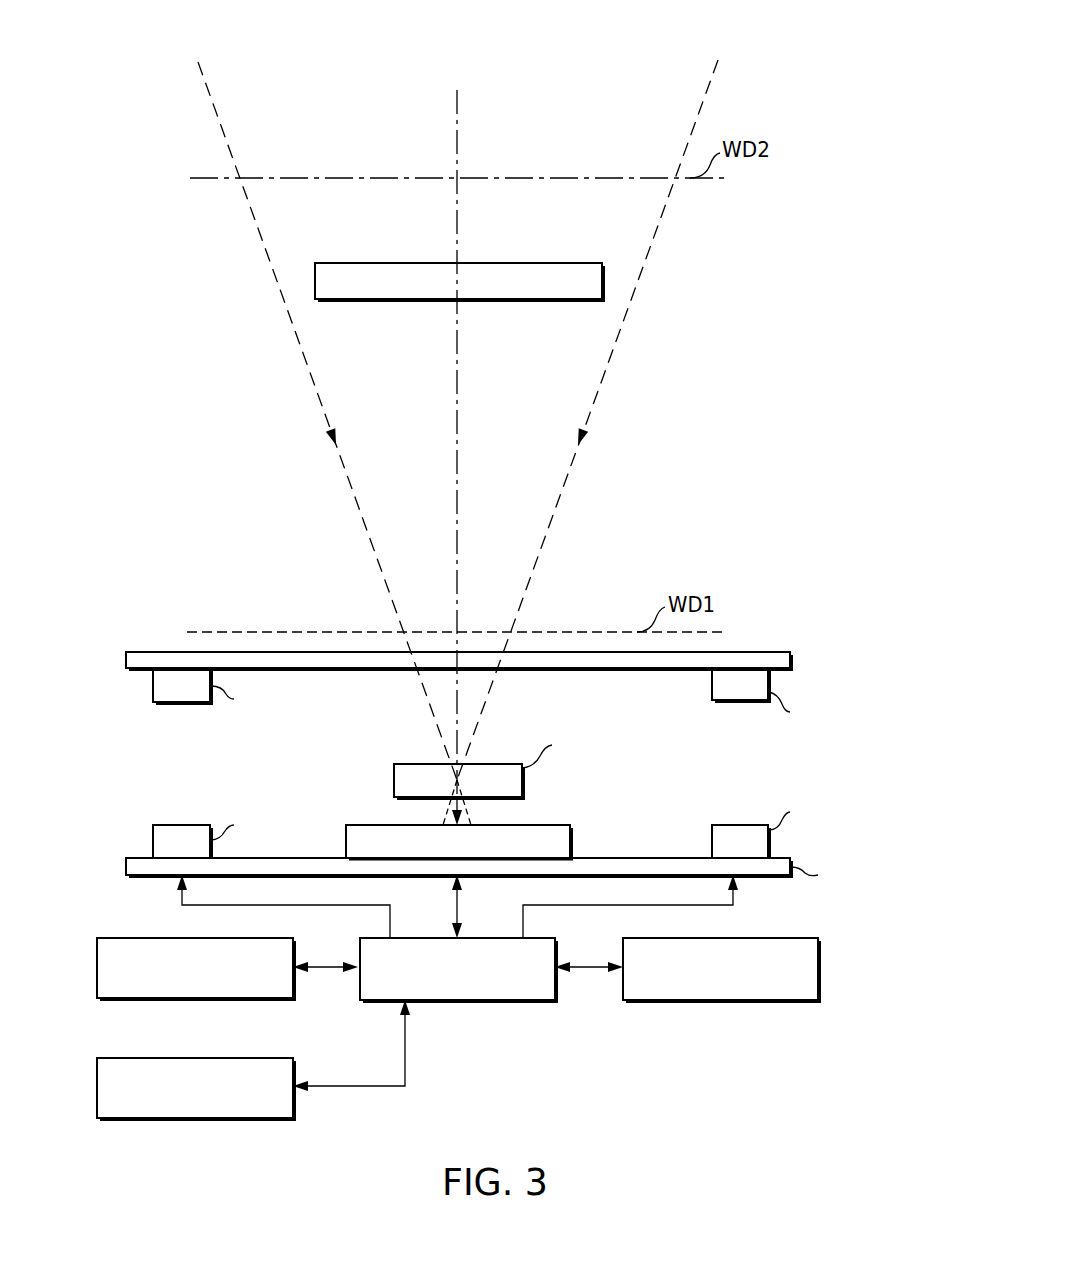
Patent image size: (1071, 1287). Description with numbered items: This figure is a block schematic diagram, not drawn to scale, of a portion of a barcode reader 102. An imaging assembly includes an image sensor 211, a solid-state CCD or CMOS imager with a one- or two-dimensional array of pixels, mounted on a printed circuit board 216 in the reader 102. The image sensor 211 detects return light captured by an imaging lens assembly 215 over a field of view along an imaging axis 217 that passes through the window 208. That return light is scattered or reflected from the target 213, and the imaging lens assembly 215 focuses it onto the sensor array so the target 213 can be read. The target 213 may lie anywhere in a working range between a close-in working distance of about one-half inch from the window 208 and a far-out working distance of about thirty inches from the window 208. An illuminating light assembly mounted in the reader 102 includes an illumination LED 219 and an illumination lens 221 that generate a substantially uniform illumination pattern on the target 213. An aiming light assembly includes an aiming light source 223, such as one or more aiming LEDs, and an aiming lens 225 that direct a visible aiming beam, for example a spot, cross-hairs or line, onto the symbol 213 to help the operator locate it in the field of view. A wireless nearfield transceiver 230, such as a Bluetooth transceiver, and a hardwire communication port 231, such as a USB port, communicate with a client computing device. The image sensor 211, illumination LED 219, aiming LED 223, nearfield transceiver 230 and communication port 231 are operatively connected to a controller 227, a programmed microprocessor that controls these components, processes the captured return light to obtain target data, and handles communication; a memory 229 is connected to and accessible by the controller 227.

The barcode reader 102 is at (98, 72).
The window 208 is at (125, 659).
The image sensor 211 is at (571, 845).
The target 213 is at (377, 301).
The imaging lens assembly 215 is at (393, 778).
The printed circuit board 216 is at (125, 866).
The imaging axis 217 is at (456, 131).
The illumination LED 219 is at (740, 824).
The illumination lens 221 is at (738, 701).
The aiming light source 223 is at (181, 824).
The aiming lens 225 is at (182, 703).
The controller 227 is at (457, 1001).
The memory 229 is at (96, 1086).
The nearfield transceiver 230 is at (96, 968).
The communication port 231 is at (720, 1001).